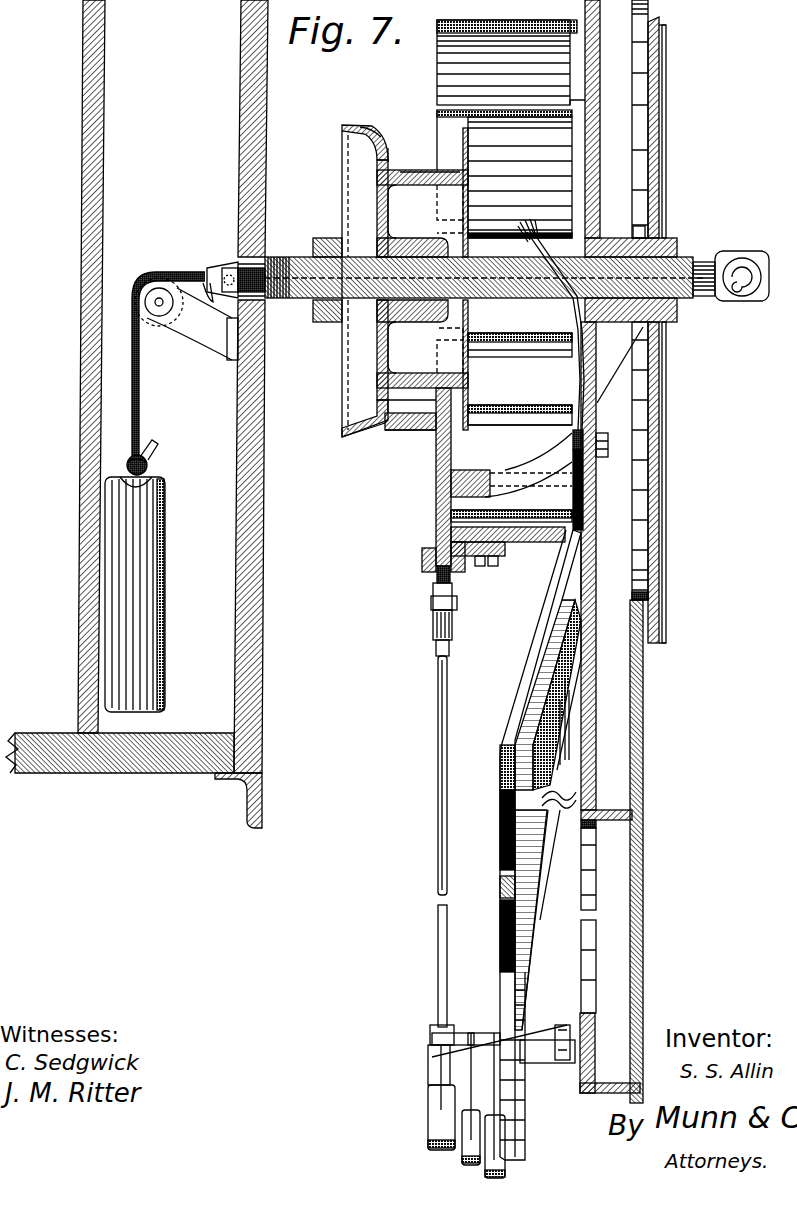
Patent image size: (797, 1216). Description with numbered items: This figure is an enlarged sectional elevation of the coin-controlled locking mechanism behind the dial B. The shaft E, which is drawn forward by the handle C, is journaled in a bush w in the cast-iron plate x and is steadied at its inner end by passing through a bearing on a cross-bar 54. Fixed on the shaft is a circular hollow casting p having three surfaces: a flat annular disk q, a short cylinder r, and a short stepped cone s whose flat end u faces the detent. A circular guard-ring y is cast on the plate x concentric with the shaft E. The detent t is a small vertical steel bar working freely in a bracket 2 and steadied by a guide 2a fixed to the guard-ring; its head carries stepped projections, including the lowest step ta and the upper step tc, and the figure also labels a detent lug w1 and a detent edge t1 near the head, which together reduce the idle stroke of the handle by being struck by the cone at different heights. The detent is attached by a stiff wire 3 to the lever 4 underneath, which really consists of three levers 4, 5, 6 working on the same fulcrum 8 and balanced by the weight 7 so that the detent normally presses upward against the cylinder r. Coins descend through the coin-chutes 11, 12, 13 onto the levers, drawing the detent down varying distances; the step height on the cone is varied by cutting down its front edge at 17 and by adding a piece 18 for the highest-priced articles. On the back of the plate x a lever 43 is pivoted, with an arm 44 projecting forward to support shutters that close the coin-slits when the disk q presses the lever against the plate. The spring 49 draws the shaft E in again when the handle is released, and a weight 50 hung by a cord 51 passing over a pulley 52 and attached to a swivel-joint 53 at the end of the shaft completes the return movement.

The weight 50 is at (135, 594).
The cord 51 is at (140, 388).
The pulley 52 is at (150, 318).
The swivel-joint 53 is at (226, 266).
The cross-bar 54 is at (326, 324).
The shaft E is at (294, 300).
The handle C is at (742, 276).
The circular hollow casting p is at (405, 281).
The cone s is at (384, 140).
The flat end of the cone u is at (389, 150).
The short cylinder r is at (422, 170).
The flat annular disk q is at (468, 141).
The circular guard-ring y is at (511, 271).
The lever 43 is at (542, 324).
The spring 49 is at (578, 328).
The arm 44 is at (617, 330).
The bracket 2 is at (511, 465).
The guide 2a is at (520, 406).
The detent t is at (436, 450).
The upper step of the detent tc is at (410, 413).
The bar lug w1 is at (397, 403).
The bar edge t1 is at (412, 410).
The lower step of the detent ta is at (396, 431).
The added piece 18 is at (362, 432).
The cut-down front edge of the step 17 is at (390, 432).
The stiff wire 3 is at (448, 794).
The cast-iron plate x is at (604, 118).
The bush w is at (614, 242).
The dial B is at (666, 97).
The coin-chute 13 is at (500, 836).
The coin-chute 12 is at (500, 940).
The coin-chute 11 is at (540, 845).
The fulcrum 8 is at (456, 1032).
The lever 4 is at (430, 1053).
The lever 5 is at (476, 1036).
The lever 6 is at (488, 1036).
The weight 7 is at (428, 1120).